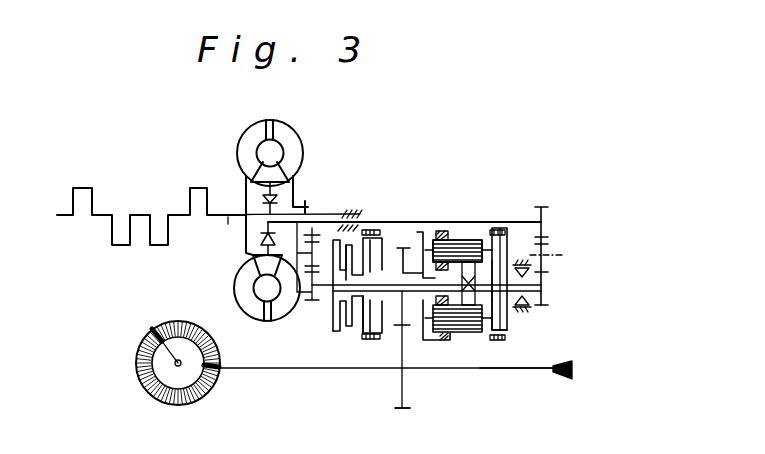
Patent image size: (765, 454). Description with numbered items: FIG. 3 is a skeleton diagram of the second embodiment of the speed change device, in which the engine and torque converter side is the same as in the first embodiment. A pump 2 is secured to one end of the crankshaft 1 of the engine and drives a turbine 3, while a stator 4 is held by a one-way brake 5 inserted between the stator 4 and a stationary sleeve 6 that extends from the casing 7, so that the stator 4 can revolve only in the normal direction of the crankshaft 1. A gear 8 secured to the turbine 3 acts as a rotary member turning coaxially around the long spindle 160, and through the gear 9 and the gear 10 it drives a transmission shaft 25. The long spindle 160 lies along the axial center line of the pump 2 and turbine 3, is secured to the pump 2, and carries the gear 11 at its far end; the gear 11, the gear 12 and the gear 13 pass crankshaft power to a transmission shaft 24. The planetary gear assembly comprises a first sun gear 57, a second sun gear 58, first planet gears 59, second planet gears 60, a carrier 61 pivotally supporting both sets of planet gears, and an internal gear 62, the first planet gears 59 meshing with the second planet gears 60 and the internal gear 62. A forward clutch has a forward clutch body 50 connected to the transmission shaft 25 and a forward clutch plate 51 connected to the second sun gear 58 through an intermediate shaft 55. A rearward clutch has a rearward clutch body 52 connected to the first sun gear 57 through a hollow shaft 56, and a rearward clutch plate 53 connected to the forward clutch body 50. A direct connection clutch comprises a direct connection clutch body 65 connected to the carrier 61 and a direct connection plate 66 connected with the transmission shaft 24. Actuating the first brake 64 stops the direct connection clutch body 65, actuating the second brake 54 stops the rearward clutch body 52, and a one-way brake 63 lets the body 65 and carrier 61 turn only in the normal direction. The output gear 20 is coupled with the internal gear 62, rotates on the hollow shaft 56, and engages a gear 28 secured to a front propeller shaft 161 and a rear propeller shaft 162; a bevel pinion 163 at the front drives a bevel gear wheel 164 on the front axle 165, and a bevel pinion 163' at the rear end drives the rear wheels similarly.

The crankshaft 1 is at (213, 220).
The pump 2 is at (255, 128).
The turbine 3 is at (292, 142).
The stator 4 is at (262, 175).
The one-way brake 5 is at (262, 198).
The stationary sleeve 6 is at (266, 214).
The casing 7 is at (347, 210).
The gear 8 is at (307, 205).
The gear 9 is at (328, 227).
The gear 10 is at (300, 320).
The gear 11 is at (548, 208).
The gear 12 is at (548, 243).
The gear 13 is at (548, 273).
The output gear 20 is at (401, 412).
The transmission shaft 24 is at (548, 304).
The transmission shaft 25 is at (314, 305).
The gear 28 is at (405, 400).
The forward clutch body 50 is at (343, 330).
The forward clutch plate 51 is at (333, 330).
The rearward clutch body 52 is at (350, 330).
The rearward clutch plate 53 is at (365, 335).
The second brake 54 is at (373, 230).
The intermediate shaft 55 is at (418, 320).
The hollow shaft 56 is at (372, 341).
The first sun gear 57 is at (418, 231).
The second sun gear 58 is at (470, 333).
The first planet gears 59 is at (457, 240).
The second planet gears 60 is at (474, 240).
The carrier 61 is at (495, 230).
The internal gear 62 is at (446, 231).
The one-way brake 63 is at (530, 305).
The first brake 64 is at (504, 228).
The direct connection clutch body 65 is at (510, 330).
The direct connection plate 66 is at (510, 318).
The long spindle 160 is at (393, 221).
The front propeller shaft 161 is at (262, 370).
The rear propeller shaft 162 is at (511, 371).
The bevel pinion 163 is at (227, 399).
The bevel pinion 163' is at (579, 393).
The bevel gear wheel 164 is at (152, 396).
The front axle 165 is at (156, 333).